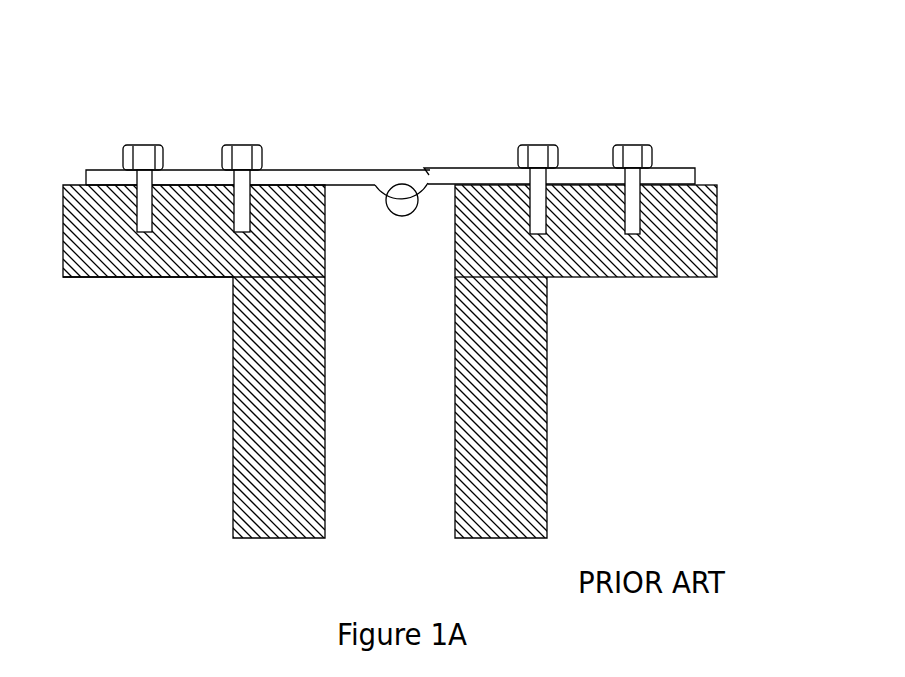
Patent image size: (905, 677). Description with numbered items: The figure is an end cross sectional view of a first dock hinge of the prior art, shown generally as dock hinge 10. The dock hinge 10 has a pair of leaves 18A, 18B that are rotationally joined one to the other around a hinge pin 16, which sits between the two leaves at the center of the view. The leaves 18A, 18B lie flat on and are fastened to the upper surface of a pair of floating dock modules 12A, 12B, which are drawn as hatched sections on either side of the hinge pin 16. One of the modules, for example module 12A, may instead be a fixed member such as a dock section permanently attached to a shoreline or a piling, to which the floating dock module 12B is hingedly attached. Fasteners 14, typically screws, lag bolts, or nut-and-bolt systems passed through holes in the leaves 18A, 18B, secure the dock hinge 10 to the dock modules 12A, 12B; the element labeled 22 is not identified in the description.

The dock hinge 10 is at (770, 110).
The floating dock module 12A is at (233, 453).
The floating dock module 12B is at (548, 452).
The fasteners 14 is at (538, 145).
The hinge pin 16 is at (402, 200).
The leaf 18A is at (103, 170).
The leaf 18B is at (683, 168).
The support block 22 is at (677, 187).